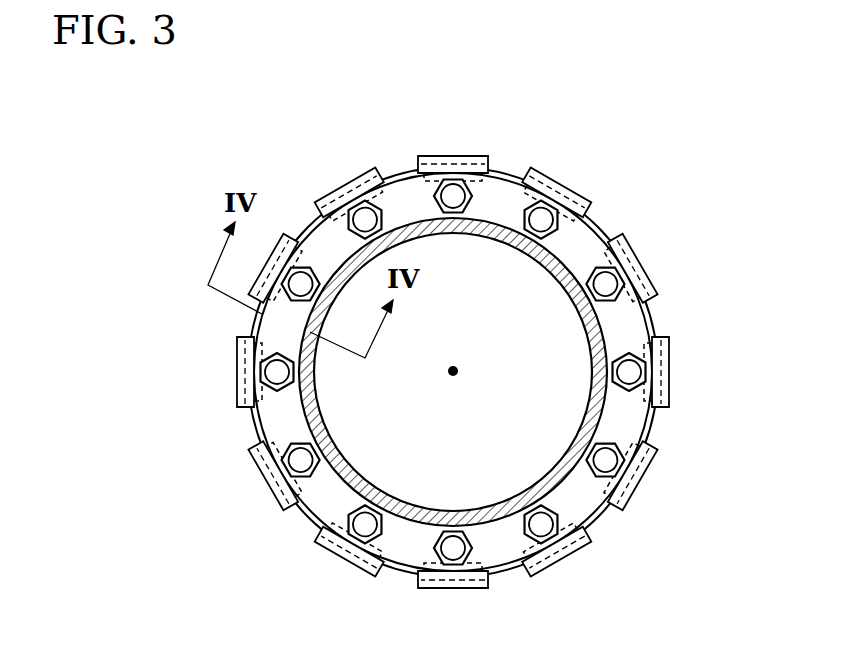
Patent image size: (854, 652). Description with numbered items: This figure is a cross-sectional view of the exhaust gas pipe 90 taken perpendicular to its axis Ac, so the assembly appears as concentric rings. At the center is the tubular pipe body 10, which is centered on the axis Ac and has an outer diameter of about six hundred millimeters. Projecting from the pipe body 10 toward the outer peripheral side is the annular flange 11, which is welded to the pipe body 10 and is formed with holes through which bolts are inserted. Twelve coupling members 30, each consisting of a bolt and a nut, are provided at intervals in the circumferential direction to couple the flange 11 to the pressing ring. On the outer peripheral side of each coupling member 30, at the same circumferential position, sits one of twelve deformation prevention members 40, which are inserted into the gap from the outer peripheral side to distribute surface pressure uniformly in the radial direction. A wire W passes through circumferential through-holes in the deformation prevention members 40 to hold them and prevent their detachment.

The pipe body 10 is at (600, 407).
The flange 11 is at (270, 417).
The wire W is at (512, 170).
The deformation prevention member 40 is at (485, 331).
The coupling member 30 is at (560, 232).
The axis Ac is at (447, 377).
The exhaust gas pipe 90 is at (156, 254).